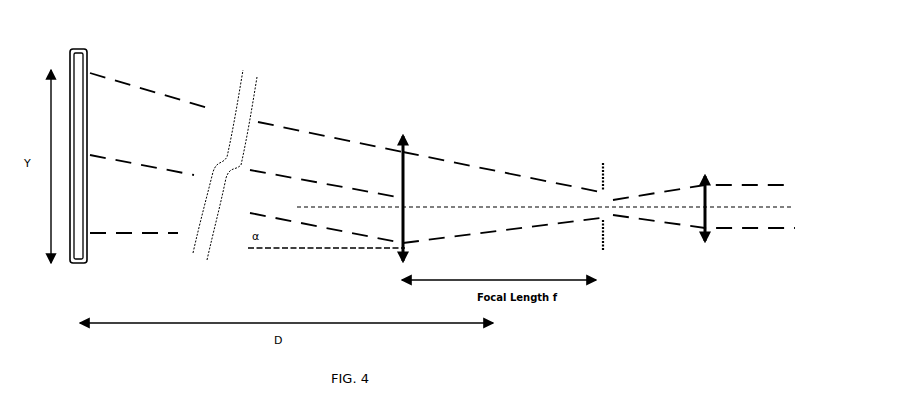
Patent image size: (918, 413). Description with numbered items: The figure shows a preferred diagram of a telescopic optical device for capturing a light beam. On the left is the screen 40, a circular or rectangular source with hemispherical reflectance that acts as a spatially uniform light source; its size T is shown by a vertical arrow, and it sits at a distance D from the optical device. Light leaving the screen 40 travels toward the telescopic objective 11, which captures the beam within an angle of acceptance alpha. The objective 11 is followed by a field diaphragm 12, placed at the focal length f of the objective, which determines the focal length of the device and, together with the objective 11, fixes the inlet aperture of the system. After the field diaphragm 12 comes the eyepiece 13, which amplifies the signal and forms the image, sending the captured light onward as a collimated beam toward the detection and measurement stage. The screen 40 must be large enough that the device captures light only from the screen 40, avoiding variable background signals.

The screen 40 is at (86, 63).
The telescopic objective 11 is at (404, 128).
The field diaphragm 12 is at (601, 153).
The eyepiece 13 is at (700, 166).